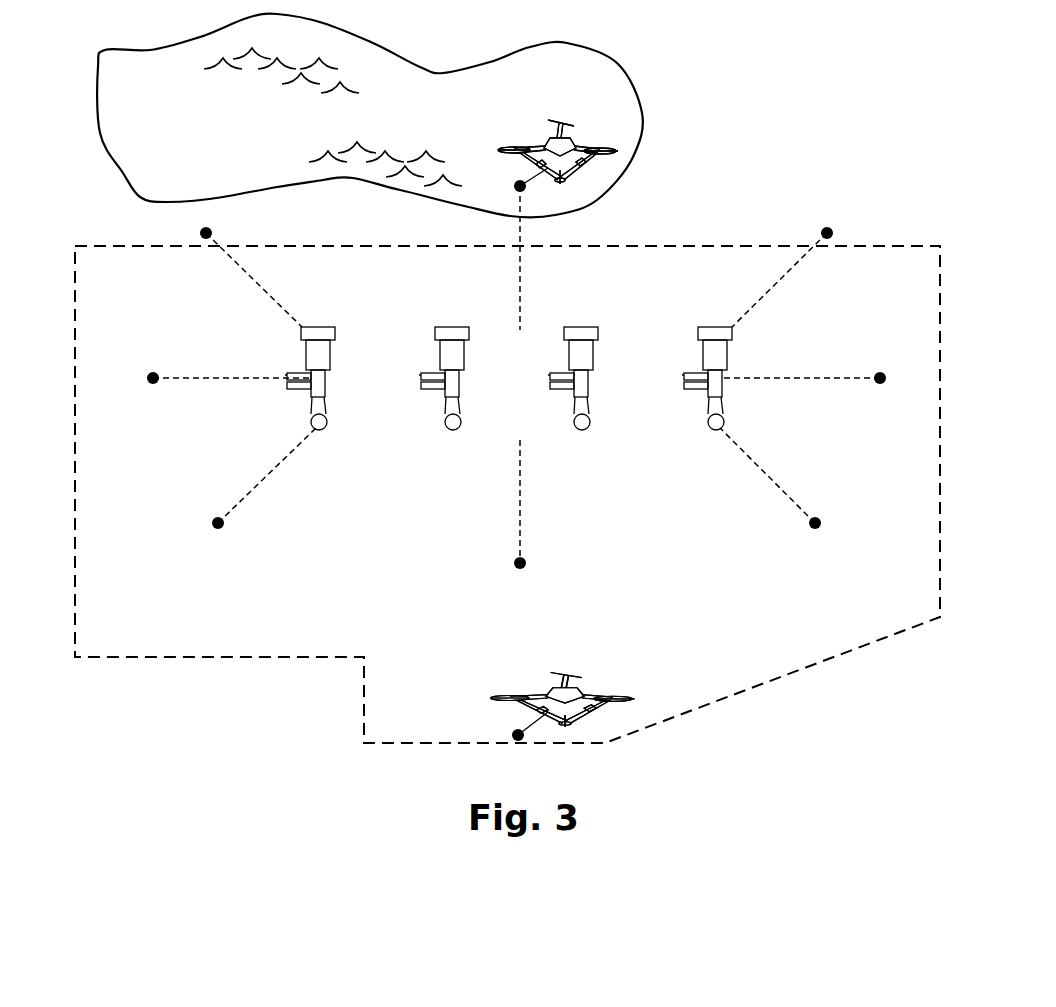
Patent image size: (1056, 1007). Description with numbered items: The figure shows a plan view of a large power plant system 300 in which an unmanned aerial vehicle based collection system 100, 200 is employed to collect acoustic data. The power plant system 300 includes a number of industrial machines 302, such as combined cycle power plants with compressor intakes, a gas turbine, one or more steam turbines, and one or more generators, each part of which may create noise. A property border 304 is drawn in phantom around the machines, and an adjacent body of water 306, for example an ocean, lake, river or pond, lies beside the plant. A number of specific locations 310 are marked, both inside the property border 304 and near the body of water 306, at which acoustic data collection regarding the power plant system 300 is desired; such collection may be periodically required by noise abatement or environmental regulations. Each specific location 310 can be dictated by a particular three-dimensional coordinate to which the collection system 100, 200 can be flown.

The collection system 100 is at (522, 130).
The collection system 200 is at (563, 423).
The power plant system 300 is at (112, 260).
The industrial machines 302 is at (716, 387).
The property border 304 is at (940, 357).
The body of water 306 is at (222, 143).
The specific locations 310 is at (805, 530).